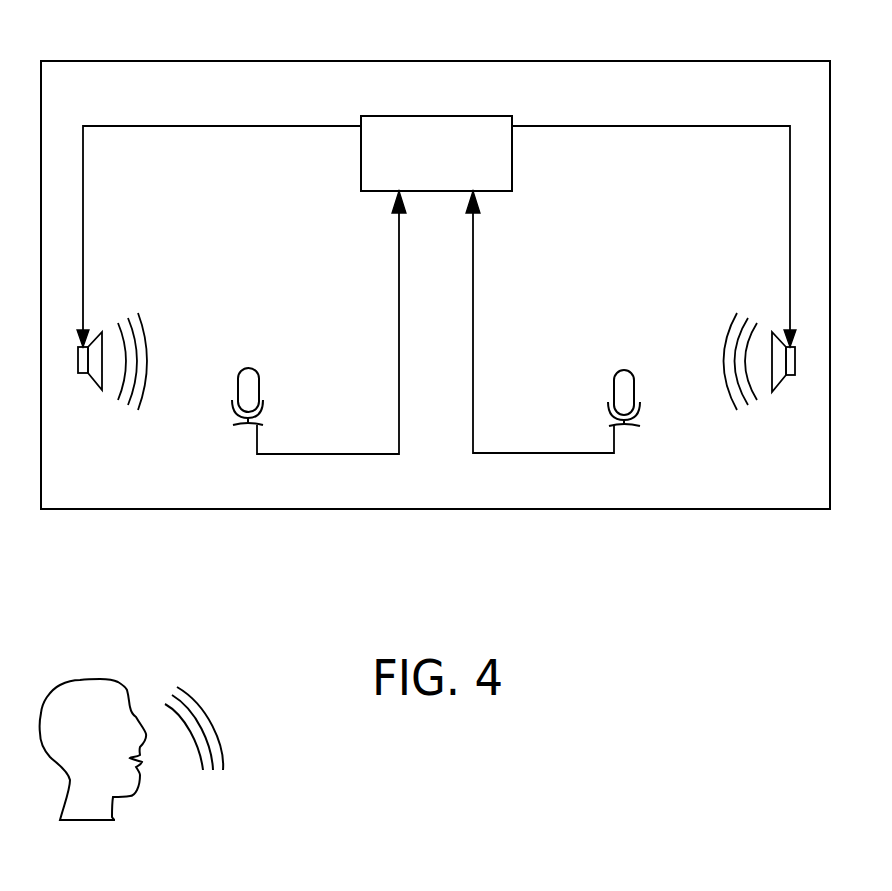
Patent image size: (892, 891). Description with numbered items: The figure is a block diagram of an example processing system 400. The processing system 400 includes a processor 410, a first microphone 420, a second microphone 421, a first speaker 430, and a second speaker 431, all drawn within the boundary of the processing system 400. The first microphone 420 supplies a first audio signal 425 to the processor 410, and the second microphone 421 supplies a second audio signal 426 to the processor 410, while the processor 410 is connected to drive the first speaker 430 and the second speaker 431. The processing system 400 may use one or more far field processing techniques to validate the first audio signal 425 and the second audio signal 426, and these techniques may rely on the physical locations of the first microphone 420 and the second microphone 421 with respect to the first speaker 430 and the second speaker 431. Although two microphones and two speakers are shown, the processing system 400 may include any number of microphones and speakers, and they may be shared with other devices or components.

The processing system 400 is at (197, 61).
The processor 410 is at (436, 153).
The first microphone 420 is at (247, 368).
The second microphone 421 is at (627, 370).
The first audio signal 425 is at (399, 273).
The second audio signal 426 is at (473, 268).
The first speaker 430 is at (83, 373).
The second speaker 431 is at (789, 375).